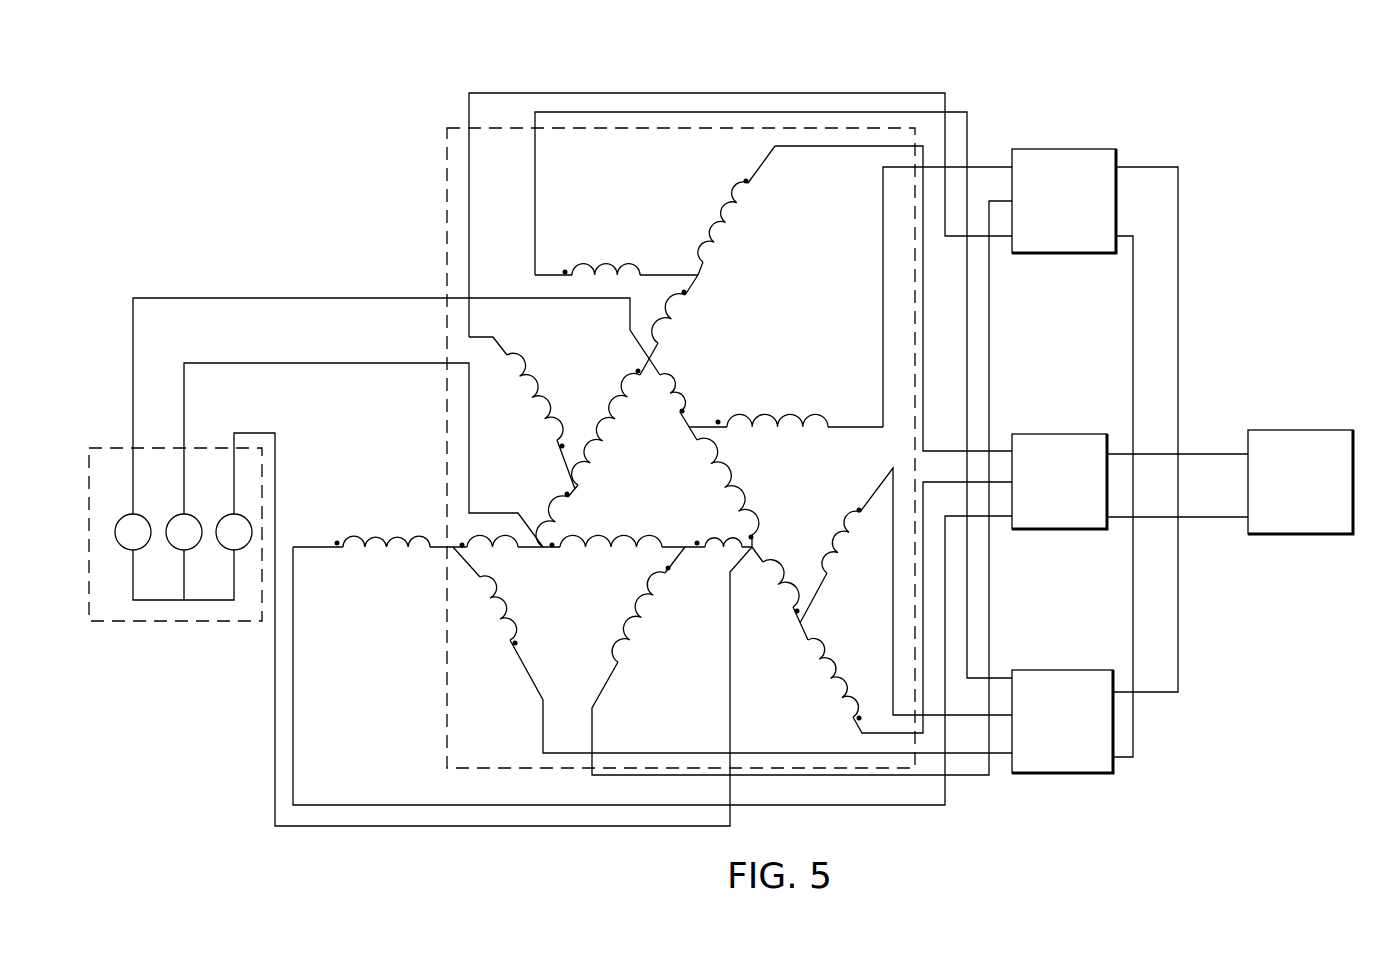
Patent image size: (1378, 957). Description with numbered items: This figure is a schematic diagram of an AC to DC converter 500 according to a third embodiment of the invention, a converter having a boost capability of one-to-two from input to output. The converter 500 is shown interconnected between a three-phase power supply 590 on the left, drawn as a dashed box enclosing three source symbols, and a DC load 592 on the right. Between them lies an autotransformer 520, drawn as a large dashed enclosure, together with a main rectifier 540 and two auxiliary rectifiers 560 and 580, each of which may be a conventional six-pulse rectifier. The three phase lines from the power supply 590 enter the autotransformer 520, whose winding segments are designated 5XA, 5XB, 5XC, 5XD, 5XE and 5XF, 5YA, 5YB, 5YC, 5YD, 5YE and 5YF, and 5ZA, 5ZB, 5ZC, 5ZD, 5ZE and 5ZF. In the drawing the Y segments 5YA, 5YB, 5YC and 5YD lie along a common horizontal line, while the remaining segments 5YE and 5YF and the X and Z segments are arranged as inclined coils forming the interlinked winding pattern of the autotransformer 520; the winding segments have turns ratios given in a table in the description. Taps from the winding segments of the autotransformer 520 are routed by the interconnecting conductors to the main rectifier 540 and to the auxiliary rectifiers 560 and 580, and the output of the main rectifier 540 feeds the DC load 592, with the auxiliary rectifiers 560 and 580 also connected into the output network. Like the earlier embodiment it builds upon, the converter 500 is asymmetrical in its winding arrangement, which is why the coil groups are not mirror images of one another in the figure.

The AC to DC converter 500 is at (258, 126).
The autotransformer 520 is at (447, 147).
The main rectifier 540 is at (1085, 433).
The auxiliary rectifier 560 is at (1085, 148).
The auxiliary rectifier 580 is at (1087, 670).
The 3-phase power supply 590 is at (207, 448).
The DC load 592 is at (1320, 430).
The winding segment 5XA is at (732, 210).
The winding segment 5XB is at (667, 325).
The winding segment 5XC is at (604, 433).
The winding segment 5XD is at (547, 517).
The winding segment 5XE is at (906, 591).
The winding segment 5XF is at (802, 488).
The winding segment 5YA is at (383, 531).
The winding segment 5YB is at (489, 533).
The winding segment 5YC is at (606, 533).
The winding segment 5YD is at (719, 532).
The winding segment 5YE is at (786, 411).
The winding segment 5YF is at (616, 260).
The winding segment 5ZA is at (910, 607).
The winding segment 5ZB is at (785, 593).
The winding segment 5ZC is at (728, 492).
The winding segment 5ZD is at (682, 407).
The winding segment 5ZE is at (740, 291).
The winding segment 5ZF is at (732, 650).